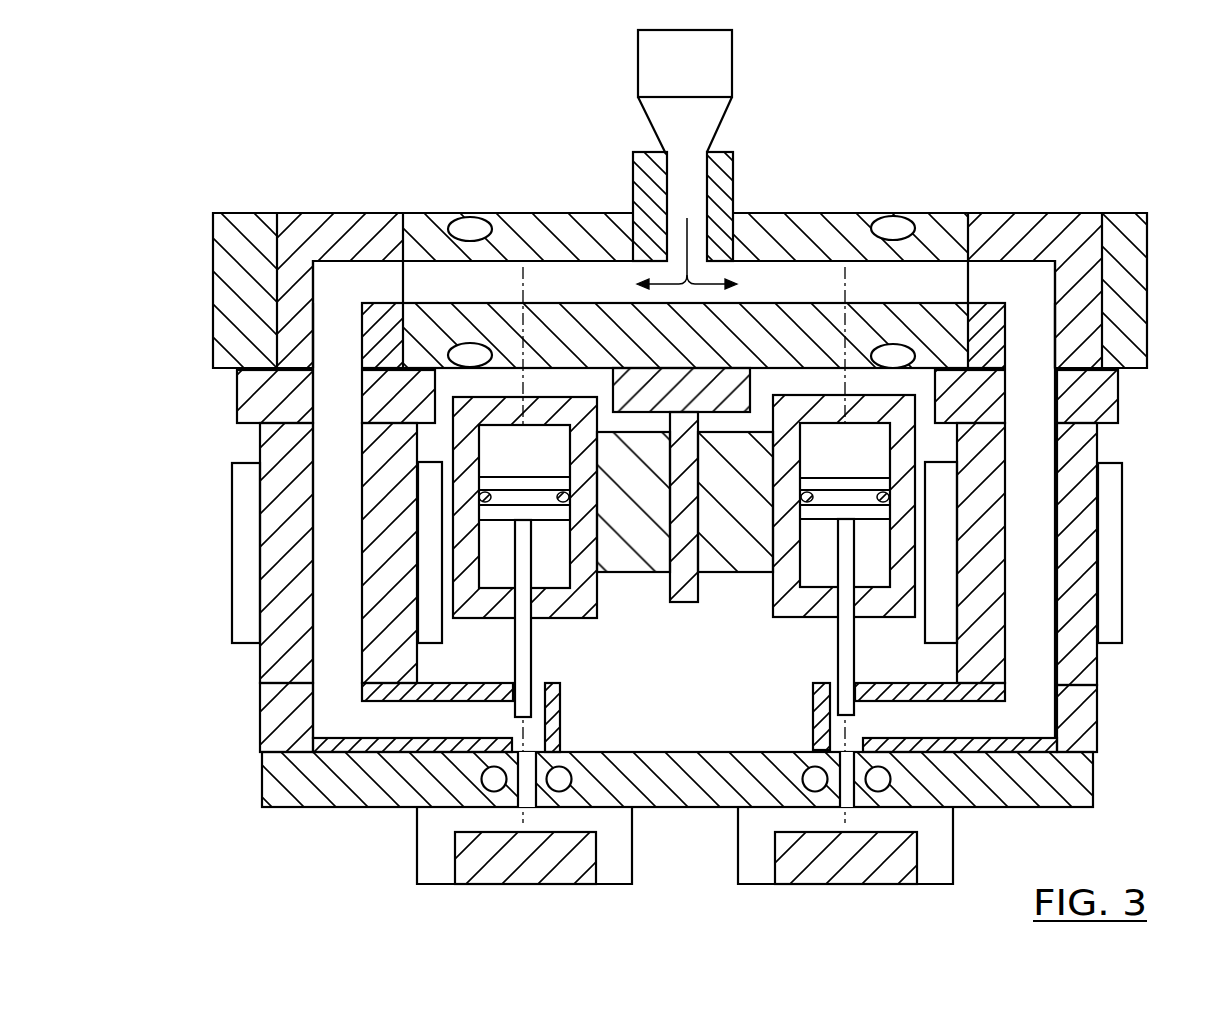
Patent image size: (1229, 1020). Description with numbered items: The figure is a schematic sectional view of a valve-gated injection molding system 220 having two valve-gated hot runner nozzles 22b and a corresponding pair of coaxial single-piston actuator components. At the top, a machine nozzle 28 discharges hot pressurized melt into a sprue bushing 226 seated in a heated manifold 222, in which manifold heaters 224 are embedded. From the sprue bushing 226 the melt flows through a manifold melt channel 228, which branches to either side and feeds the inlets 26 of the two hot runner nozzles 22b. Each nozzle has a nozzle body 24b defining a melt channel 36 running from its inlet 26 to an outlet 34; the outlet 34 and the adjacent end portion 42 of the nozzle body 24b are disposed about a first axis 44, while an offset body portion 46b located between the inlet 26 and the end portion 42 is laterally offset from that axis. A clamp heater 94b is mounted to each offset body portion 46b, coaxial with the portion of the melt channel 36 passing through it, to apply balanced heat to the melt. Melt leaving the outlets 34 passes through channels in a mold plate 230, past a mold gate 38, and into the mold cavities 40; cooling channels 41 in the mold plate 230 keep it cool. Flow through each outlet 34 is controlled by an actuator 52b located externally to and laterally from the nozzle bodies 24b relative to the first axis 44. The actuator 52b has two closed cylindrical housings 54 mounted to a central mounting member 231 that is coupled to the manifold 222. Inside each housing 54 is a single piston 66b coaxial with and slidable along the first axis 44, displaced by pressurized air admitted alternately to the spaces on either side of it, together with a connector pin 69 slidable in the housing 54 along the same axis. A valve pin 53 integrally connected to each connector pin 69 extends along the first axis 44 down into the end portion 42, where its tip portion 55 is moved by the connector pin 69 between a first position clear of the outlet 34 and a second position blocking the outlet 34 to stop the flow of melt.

The valve-gated injection molding system 220 is at (231, 178).
The heated manifold 222 is at (568, 228).
The manifold heaters 224 is at (470, 226).
The sprue bushing 226 is at (723, 182).
The manifold melt channel 228 is at (418, 282).
The machine nozzle 28 is at (722, 70).
The first axis 44 is at (526, 295).
The closed cylindrical housing 54 is at (568, 403).
The central mounting member 231 is at (733, 442).
The inlet 26 is at (343, 367).
The offset body portion 46b is at (293, 450).
The hot runner nozzle 22b is at (234, 449).
The clamp heater 94b is at (243, 513).
The nozzle body 24b is at (282, 550).
The melt channel 36 is at (333, 635).
The valve pin 53 is at (515, 634).
The piston 66b is at (553, 507).
The connector pin 69 is at (513, 560).
The actuator 52b is at (758, 594).
The tip portion 55 is at (515, 708).
The end portion 42 is at (556, 712).
The outlet 34 is at (532, 733).
The mold plate 230 is at (285, 776).
The cooling channels 41 is at (495, 780).
The mold cavity 40 is at (430, 865).
The mold gate 38 is at (527, 810).